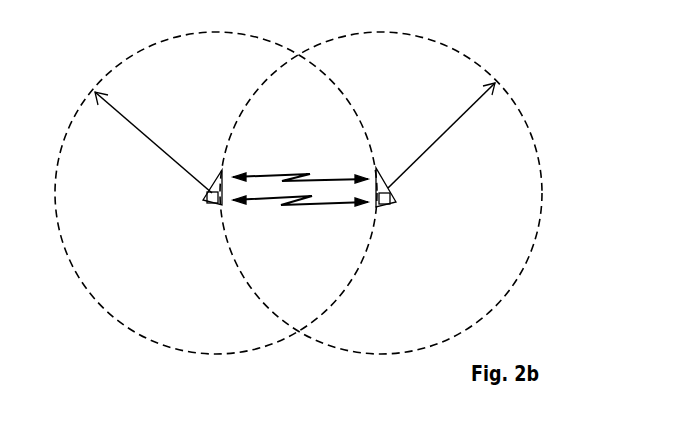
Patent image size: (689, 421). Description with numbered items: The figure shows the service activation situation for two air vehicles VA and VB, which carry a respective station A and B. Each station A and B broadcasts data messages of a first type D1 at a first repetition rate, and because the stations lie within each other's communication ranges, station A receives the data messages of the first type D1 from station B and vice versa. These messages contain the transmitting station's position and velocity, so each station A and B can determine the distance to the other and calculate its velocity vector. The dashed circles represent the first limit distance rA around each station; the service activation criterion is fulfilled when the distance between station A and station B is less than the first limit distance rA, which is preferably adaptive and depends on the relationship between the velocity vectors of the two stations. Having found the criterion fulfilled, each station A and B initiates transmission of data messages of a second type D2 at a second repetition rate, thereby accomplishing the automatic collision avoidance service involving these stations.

The station A is at (216, 193).
The station B is at (381, 193).
The first limit distance rA is at (298, 138).
The air vehicle VA is at (156, 213).
The air vehicle VB is at (441, 190).
The data message of a first type D1 is at (300, 163).
The data message of a second type D2 is at (300, 219).